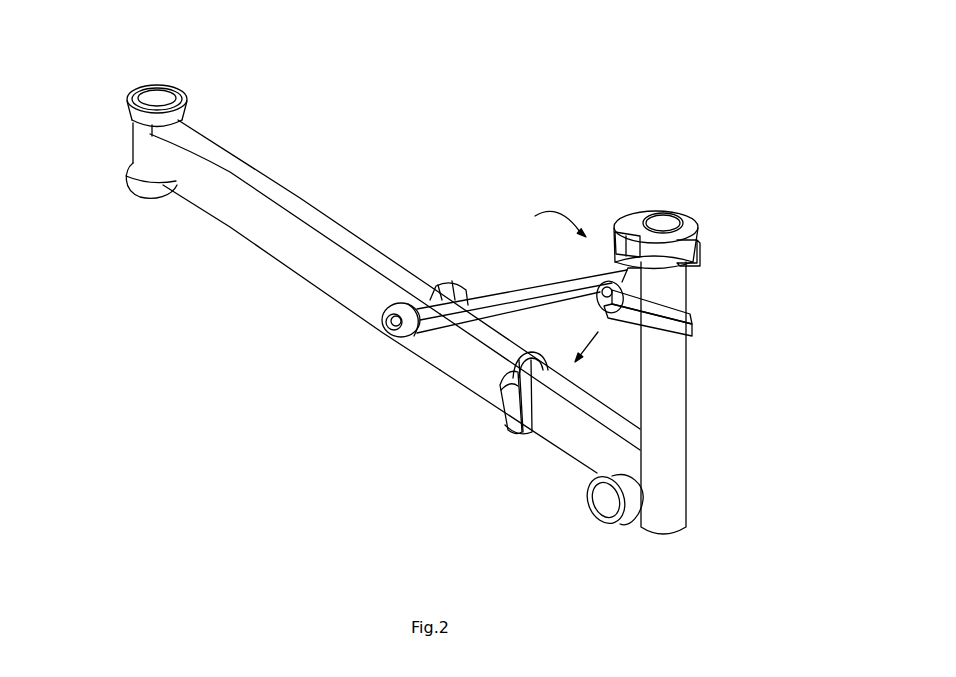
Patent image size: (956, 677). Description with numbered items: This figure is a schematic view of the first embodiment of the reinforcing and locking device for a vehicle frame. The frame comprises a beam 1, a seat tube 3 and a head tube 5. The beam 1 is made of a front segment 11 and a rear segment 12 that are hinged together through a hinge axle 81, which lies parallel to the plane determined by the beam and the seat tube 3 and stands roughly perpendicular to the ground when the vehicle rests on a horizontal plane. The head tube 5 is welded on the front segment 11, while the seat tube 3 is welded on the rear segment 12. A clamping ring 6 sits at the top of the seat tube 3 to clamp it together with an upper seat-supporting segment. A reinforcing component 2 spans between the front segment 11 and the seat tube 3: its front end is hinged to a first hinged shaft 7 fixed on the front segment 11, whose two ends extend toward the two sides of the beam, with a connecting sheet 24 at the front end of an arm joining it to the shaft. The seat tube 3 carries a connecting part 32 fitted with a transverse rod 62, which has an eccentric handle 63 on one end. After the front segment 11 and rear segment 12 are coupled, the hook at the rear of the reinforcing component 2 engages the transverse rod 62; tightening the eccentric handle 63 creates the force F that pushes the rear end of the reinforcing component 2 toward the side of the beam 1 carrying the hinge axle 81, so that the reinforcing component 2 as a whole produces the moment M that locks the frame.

The beam 1 is at (334, 170).
The reinforcing component 2 is at (500, 280).
The seat tube 3 is at (675, 425).
The head tube 5 is at (137, 182).
The clamping ring 6 is at (688, 233).
The first hinged shaft 7 is at (388, 330).
The front segment 11 is at (248, 225).
The rear segment 12 is at (578, 432).
The connecting sheet 24 is at (410, 335).
The connecting part 32 is at (625, 288).
The transverse rod 62 is at (623, 327).
The eccentric handle 63 is at (677, 328).
The hinge axle 81 is at (512, 410).